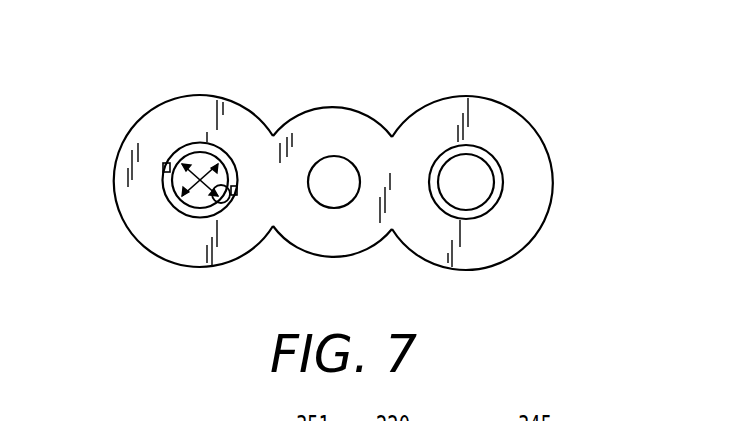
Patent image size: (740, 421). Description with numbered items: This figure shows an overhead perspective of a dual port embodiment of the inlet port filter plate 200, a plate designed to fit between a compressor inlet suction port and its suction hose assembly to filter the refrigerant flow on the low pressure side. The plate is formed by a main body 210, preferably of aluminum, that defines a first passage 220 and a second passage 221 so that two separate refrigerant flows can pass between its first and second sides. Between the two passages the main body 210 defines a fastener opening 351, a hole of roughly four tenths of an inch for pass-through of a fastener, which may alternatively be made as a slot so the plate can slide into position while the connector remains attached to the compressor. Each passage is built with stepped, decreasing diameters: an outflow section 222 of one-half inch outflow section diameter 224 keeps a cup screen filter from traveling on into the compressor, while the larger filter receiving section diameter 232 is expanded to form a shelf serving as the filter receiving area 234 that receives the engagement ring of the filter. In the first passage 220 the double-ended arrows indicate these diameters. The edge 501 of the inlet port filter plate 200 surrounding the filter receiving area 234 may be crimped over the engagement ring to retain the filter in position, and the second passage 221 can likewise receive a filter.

The inlet port filter plate 200 is at (352, 72).
The main body 210 is at (532, 185).
The first passage 220 is at (202, 160).
The second passage 221 is at (470, 177).
The outflow section 222 is at (215, 203).
The outflow section diameter 224 is at (205, 212).
The filter receiving section diameter 232 is at (215, 196).
The filter receiving area 234 is at (233, 163).
The fastener opening 351 is at (338, 170).
The edge 501 is at (167, 165).